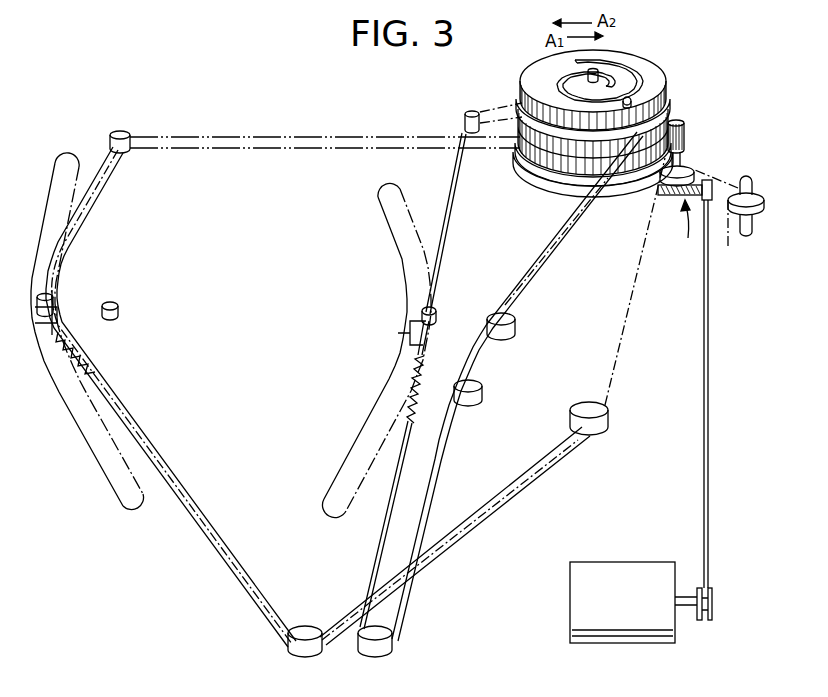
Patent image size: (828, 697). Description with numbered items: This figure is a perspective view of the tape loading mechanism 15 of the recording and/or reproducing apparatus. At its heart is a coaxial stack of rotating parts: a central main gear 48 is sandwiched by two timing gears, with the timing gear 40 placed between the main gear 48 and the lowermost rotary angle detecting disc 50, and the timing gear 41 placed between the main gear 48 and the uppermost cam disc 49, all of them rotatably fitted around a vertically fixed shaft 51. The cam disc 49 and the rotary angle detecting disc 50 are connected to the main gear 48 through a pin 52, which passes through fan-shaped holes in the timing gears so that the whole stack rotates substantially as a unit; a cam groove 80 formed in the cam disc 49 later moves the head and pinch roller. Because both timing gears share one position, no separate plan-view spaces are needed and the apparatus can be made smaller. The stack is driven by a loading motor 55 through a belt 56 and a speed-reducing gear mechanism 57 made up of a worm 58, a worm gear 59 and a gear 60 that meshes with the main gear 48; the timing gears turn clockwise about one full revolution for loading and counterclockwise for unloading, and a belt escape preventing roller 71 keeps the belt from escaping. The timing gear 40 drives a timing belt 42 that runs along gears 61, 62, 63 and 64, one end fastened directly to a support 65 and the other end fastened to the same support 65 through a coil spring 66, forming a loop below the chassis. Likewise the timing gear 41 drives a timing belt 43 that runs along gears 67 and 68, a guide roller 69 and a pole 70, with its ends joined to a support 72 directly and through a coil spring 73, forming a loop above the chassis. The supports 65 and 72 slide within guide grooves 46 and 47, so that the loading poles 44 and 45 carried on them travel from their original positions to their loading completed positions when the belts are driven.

The tape loading mechanism 15 is at (413, 100).
The timing gear 40 is at (623, 197).
The timing gear 41 is at (518, 134).
The timing belt 42 is at (350, 135).
The timing belt 43 is at (546, 262).
The loading pole 44 is at (57, 285).
The loading pole 45 is at (438, 316).
The guide groove 46 is at (95, 443).
The guide groove 47 is at (401, 263).
The main gear 48 is at (528, 178).
The cam disc 49 is at (538, 62).
The rotary angle detecting disc 50 is at (560, 190).
The shaft 51 is at (597, 71).
The pin 52 is at (632, 100).
The loading motor 55 is at (618, 563).
The belt 56 is at (703, 392).
The gear mechanism 57 is at (682, 232).
The worm 58 is at (668, 197).
The worm gear 59 is at (690, 170).
The gear 60 is at (688, 134).
The gear 61 is at (122, 132).
The gear 62 is at (120, 311).
The gear 63 is at (304, 625).
The gear 64 is at (571, 428).
The support 65 is at (56, 306).
The coil spring 66 is at (95, 372).
The gear 67 is at (470, 111).
The gear 68 is at (398, 652).
The guide roller 69 is at (484, 394).
The pole 70 is at (516, 330).
The belt escape preventing roller 71 is at (729, 222).
The support 72 is at (409, 334).
The coil spring 73 is at (428, 363).
The cam groove 80 is at (637, 82).